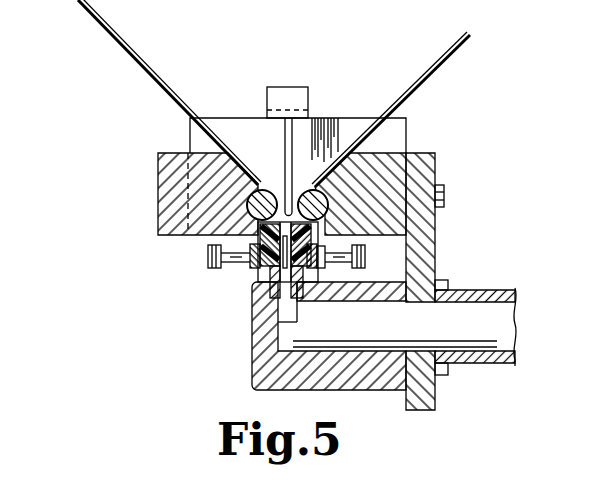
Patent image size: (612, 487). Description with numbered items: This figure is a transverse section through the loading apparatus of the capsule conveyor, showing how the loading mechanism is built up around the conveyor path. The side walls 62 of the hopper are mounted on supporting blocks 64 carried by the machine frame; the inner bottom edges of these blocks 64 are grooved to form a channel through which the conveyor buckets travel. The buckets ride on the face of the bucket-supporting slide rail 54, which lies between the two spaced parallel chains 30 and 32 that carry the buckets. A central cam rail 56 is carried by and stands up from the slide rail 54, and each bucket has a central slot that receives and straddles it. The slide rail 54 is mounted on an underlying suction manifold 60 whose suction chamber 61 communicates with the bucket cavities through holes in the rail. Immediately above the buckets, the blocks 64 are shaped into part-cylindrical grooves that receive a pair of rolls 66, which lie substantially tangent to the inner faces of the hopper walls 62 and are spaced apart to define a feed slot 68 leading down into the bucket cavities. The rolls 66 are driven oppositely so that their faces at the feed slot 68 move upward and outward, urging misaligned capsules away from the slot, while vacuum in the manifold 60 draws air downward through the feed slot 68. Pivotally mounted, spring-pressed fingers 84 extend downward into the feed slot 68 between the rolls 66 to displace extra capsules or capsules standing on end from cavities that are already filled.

The chain 30 is at (212, 253).
The chain 32 is at (365, 259).
The bucket-supporting slide rail 54 is at (272, 274).
The central cam rail 56 is at (281, 292).
The suction manifold 60 is at (270, 372).
The suction chamber 61 is at (292, 308).
The hopper side wall 62 is at (153, 84).
The supporting block 64 is at (168, 203).
The roll 66 is at (250, 204).
The feed slot 68 is at (300, 183).
The pivotally mounted finger 84 is at (285, 140).